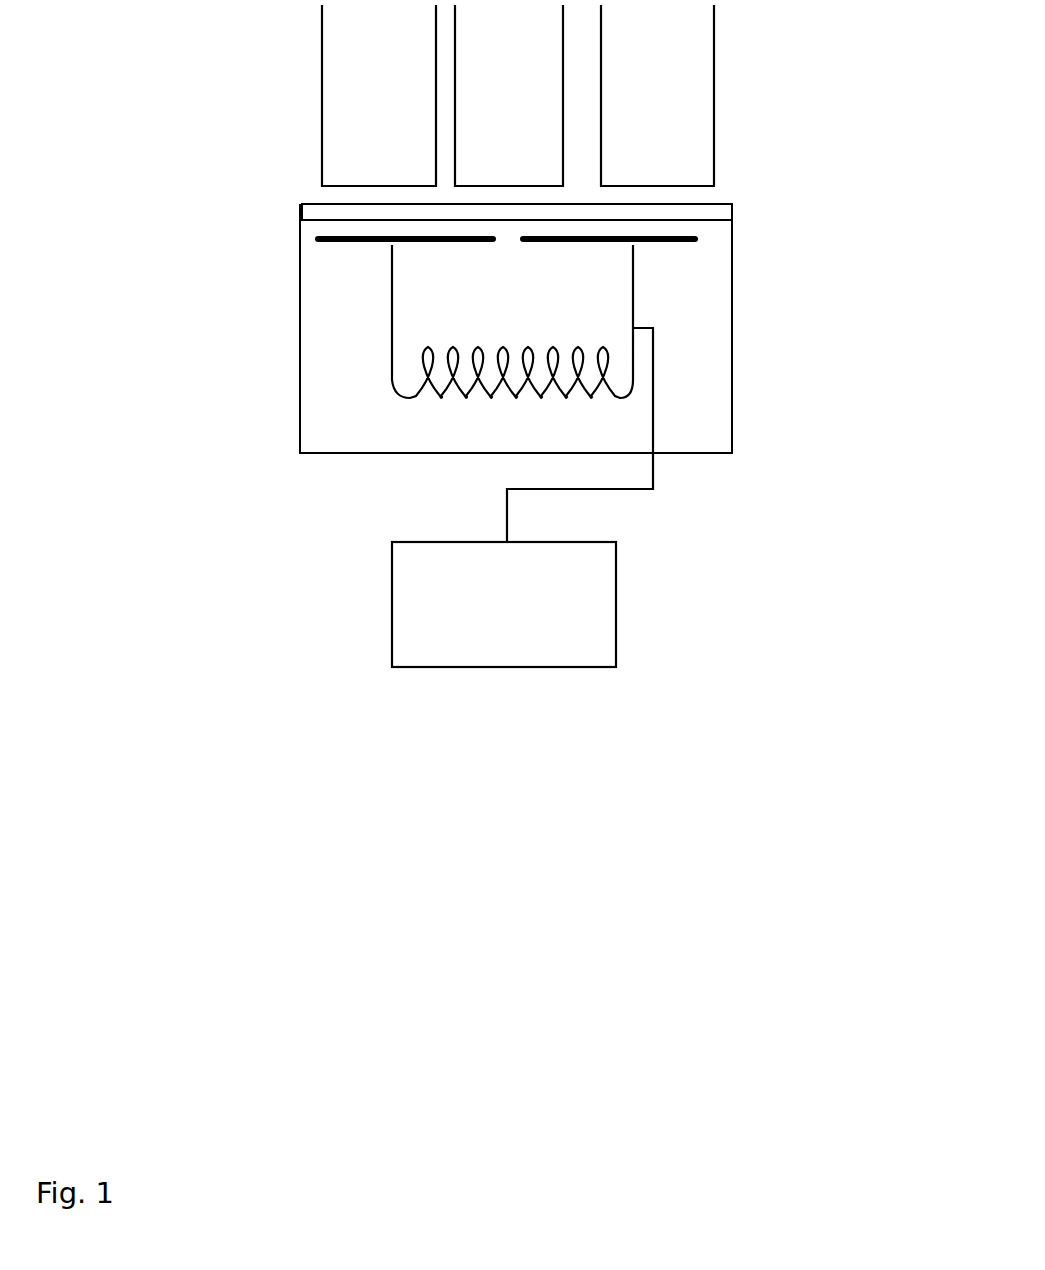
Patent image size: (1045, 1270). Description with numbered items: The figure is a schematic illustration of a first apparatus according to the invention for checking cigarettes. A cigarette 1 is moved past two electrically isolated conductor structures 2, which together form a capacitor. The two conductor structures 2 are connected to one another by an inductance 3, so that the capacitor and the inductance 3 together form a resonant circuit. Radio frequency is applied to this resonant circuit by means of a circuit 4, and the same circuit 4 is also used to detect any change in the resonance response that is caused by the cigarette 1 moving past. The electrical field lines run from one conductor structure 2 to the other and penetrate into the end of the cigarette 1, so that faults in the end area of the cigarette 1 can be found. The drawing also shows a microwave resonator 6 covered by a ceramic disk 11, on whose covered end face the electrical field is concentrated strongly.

The cigarette 1 is at (677, 138).
The ceramic disk 11 is at (677, 212).
The conductor structures 2 is at (683, 238).
The inductance 3 is at (638, 303).
The microwave resonator 6 is at (673, 363).
The circuit 4 is at (570, 577).